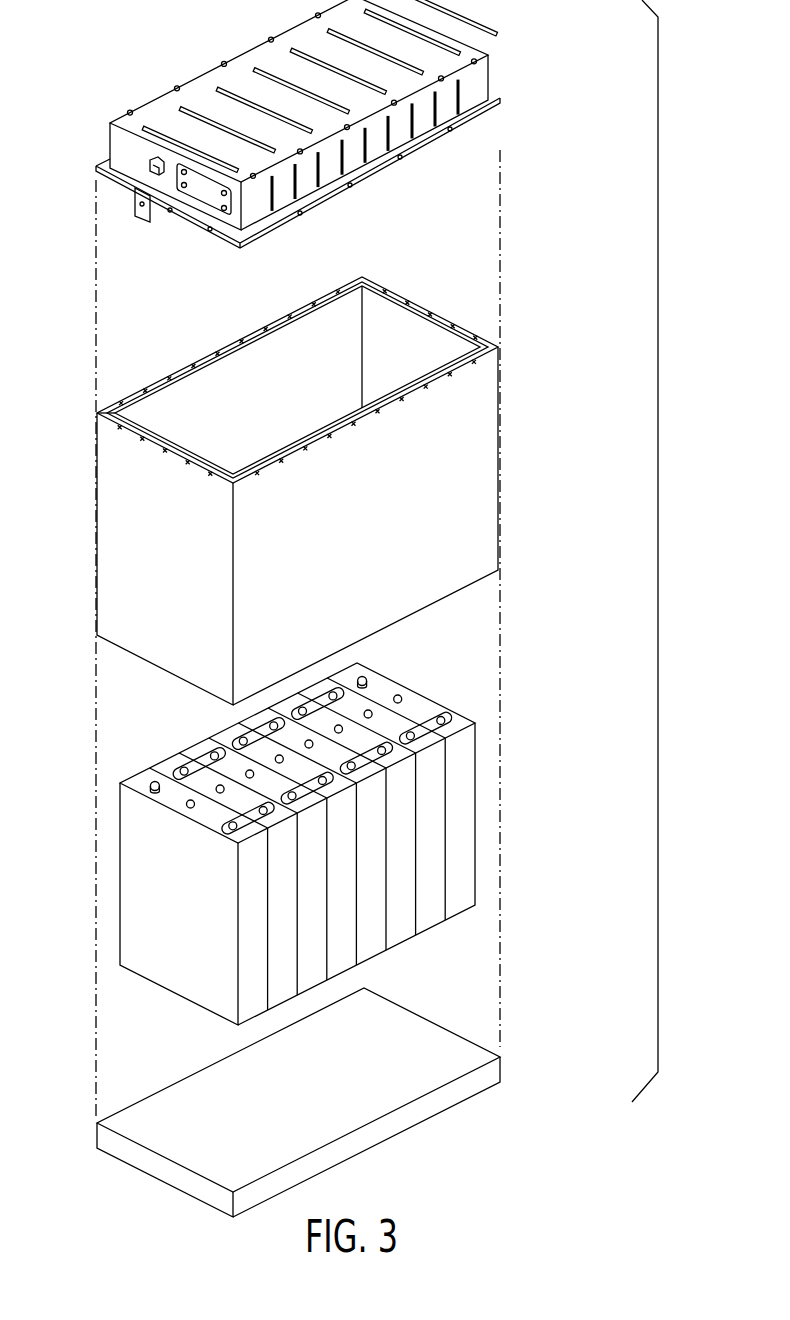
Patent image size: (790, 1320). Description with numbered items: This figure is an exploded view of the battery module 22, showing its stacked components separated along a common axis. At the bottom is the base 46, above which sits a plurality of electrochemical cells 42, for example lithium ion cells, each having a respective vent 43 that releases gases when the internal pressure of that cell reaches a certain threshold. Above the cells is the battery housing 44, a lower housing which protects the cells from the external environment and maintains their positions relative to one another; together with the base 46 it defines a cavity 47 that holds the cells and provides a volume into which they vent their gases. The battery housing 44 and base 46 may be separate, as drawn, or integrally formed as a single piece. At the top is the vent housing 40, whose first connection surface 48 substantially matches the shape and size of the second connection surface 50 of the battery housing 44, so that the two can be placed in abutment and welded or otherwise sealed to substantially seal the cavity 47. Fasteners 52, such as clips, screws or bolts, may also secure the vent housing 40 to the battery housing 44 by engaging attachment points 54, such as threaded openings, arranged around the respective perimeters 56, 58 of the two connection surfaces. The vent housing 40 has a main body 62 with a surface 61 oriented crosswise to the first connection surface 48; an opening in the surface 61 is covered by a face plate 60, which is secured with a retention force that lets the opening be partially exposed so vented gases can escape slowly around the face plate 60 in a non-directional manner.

The battery module 22 is at (660, 497).
The vent housing 40 is at (210, 103).
The electrochemical cells 42 is at (180, 892).
The vent 43 is at (296, 712).
The battery housing 44 is at (160, 503).
The base 46 is at (138, 1117).
The cavity 47 is at (392, 327).
The first connection surface 48 is at (320, 200).
The second connection surface 50 is at (324, 380).
The fasteners 52 is at (427, 137).
The attachment points 54 is at (488, 380).
The perimeter of the first connection surface 56 is at (127, 183).
The perimeter of the second connection surface 58 is at (130, 396).
The face plate 60 is at (202, 190).
The surface 61 is at (123, 155).
The main body 62 is at (325, 47).